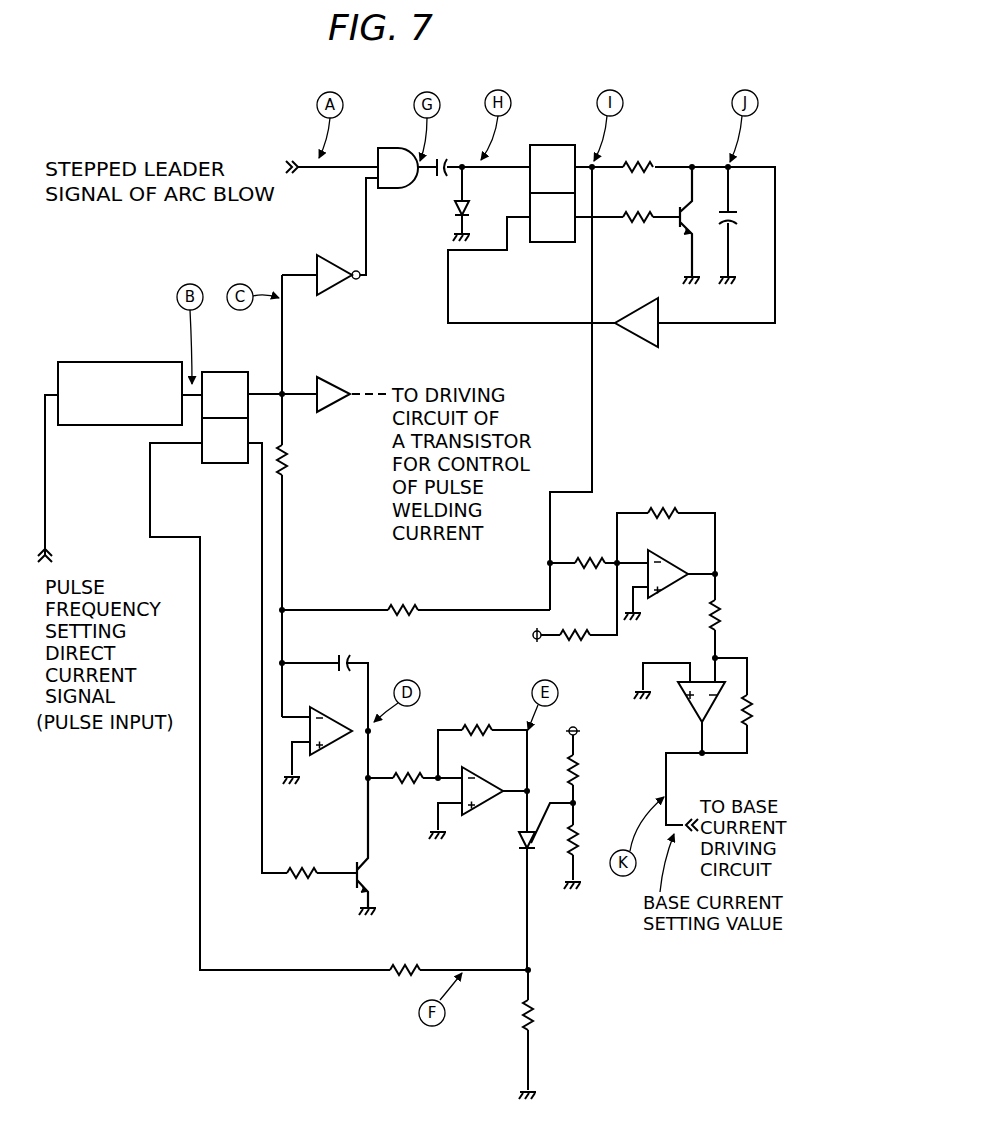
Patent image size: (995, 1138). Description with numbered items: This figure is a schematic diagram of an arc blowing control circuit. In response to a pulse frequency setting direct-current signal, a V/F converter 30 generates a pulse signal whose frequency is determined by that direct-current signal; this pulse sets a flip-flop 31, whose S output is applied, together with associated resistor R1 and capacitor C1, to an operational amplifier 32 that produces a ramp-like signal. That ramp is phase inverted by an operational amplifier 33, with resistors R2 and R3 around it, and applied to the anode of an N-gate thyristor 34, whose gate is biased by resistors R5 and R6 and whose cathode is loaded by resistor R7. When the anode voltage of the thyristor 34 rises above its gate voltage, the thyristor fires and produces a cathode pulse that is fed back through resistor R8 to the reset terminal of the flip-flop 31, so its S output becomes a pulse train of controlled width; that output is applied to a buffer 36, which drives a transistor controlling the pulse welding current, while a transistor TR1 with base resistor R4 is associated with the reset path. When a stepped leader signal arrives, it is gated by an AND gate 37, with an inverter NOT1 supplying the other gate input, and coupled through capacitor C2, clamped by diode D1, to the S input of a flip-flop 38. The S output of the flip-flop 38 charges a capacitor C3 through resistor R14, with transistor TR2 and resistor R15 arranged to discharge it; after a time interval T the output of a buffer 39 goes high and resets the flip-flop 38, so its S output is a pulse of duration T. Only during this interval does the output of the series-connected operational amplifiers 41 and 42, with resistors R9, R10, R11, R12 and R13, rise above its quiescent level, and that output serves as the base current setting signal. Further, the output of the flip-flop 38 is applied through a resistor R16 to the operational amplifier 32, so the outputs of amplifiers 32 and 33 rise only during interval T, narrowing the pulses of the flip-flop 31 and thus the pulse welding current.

The V/F converter 30 is at (133, 362).
The flip-flop 31 is at (228, 372).
The operational amplifier 32 is at (330, 715).
The operational amplifier 33 is at (481, 778).
The N-gate thyristor 34 is at (517, 849).
The buffer 36 is at (327, 380).
The AND gate 37 is at (395, 148).
The flip-flop 38 is at (557, 145).
The buffer 39 is at (637, 313).
The operational amplifier 41 is at (665, 558).
The operational amplifier 42 is at (700, 680).
The NOT gate NOT1 is at (338, 290).
The transistor TR1 is at (385, 843).
The transistor TR2 is at (680, 231).
The diode D1 is at (477, 200).
The capacitor C1 is at (343, 651).
The capacitor C2 is at (444, 156).
The capacitor C3 is at (736, 223).
The resistor R1 is at (297, 460).
The resistor R2 is at (407, 765).
The resistor R3 is at (476, 718).
The resistor R4 is at (321, 861).
The resistor R5 is at (586, 770).
The resistor R6 is at (586, 840).
The resistor R7 is at (513, 1015).
The resistor R8 is at (404, 957).
The resistor R9 is at (588, 550).
The resistor R10 is at (580, 622).
The resistor R11 is at (664, 500).
The resistor R12 is at (734, 615).
The resistor R13 is at (767, 710).
The resistor R14 is at (640, 152).
The resistor R15 is at (627, 204).
The resistor R16 is at (408, 598).